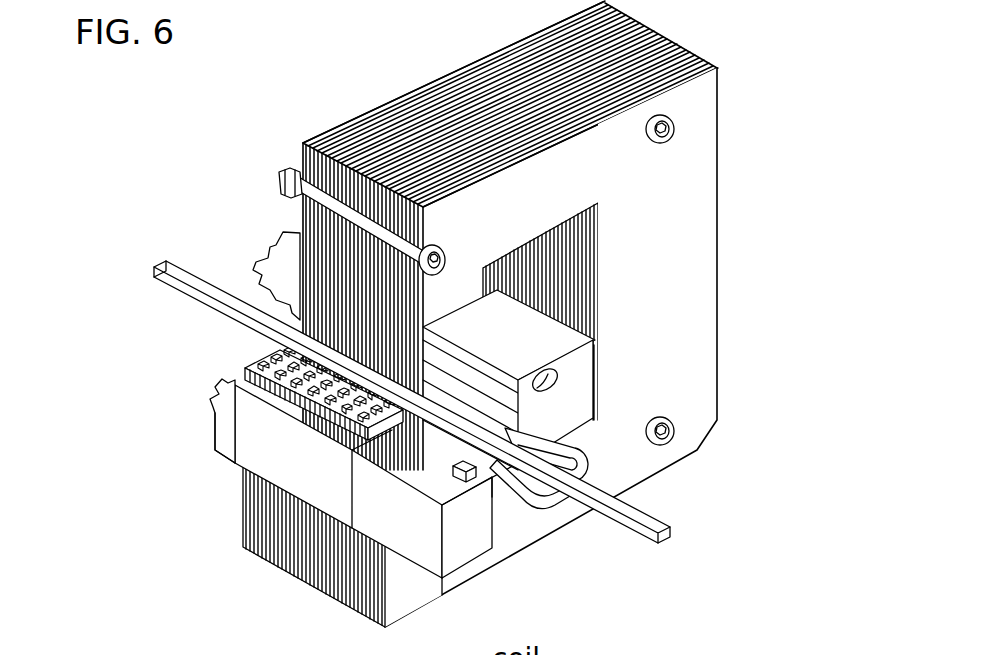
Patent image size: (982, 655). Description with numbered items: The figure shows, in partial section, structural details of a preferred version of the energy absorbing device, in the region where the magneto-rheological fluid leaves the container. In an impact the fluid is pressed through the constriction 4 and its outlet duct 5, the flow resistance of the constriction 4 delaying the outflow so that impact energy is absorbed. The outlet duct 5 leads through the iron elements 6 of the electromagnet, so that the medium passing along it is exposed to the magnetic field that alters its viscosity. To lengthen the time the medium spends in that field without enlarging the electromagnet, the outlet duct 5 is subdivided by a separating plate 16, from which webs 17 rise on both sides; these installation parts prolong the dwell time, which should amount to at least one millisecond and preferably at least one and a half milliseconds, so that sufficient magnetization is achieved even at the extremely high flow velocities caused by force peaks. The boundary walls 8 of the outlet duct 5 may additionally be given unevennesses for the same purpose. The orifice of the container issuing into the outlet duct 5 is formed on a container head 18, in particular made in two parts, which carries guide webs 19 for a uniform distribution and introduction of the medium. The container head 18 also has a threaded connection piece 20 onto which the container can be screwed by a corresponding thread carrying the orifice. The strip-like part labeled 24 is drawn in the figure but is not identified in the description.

The constriction 4 is at (393, 443).
The outlet duct 5 is at (256, 396).
The iron element 6 is at (403, 115).
The boundary wall 8 is at (248, 452).
The separating plate 16 is at (262, 357).
The web 17 is at (257, 273).
The container head 18 is at (429, 542).
The guide web 19 is at (463, 457).
The threaded connection piece 20 is at (583, 458).
The strip 24 is at (632, 518).